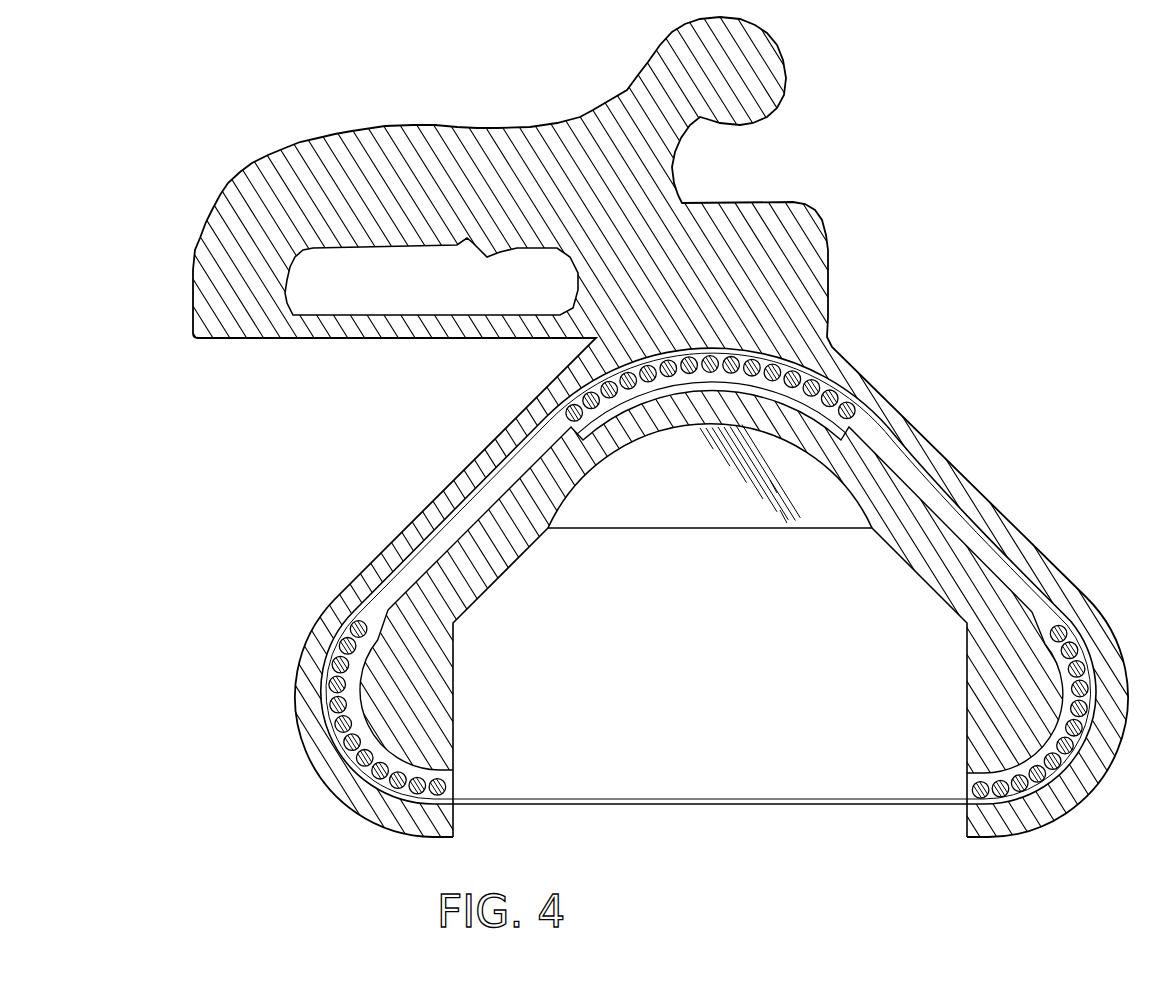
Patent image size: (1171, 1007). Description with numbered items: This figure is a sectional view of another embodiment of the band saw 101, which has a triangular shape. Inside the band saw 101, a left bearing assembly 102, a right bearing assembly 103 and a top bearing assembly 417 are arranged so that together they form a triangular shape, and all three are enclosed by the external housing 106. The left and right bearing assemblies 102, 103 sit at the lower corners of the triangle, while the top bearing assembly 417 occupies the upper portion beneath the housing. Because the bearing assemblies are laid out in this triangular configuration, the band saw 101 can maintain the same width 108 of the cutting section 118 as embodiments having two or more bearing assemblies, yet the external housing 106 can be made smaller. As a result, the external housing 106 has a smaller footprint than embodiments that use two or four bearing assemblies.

The band saw 101 is at (110, 136).
The external housing 106 is at (1083, 599).
The left bearing assembly 102 is at (363, 730).
The right bearing assembly 103 is at (1057, 730).
The cutting section 118 is at (730, 665).
The top bearing assembly 417 is at (663, 430).
The width 108 is at (453, 853).